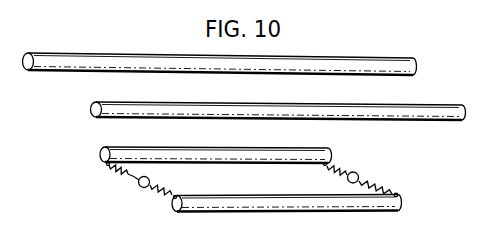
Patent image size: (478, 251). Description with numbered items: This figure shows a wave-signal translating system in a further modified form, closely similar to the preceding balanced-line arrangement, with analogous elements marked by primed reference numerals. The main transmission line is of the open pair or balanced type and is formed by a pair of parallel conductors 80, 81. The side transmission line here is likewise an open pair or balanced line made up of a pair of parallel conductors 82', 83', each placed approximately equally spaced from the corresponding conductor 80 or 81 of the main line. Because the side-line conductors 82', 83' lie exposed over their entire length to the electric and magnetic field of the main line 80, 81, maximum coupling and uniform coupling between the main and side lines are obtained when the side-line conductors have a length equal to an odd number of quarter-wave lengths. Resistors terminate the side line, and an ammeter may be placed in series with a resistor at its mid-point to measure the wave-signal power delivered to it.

The conductor 80 is at (164, 55).
The conductor 81 is at (178, 120).
The side-line conductor 82' is at (230, 147).
The side-line conductor 83' is at (287, 219).